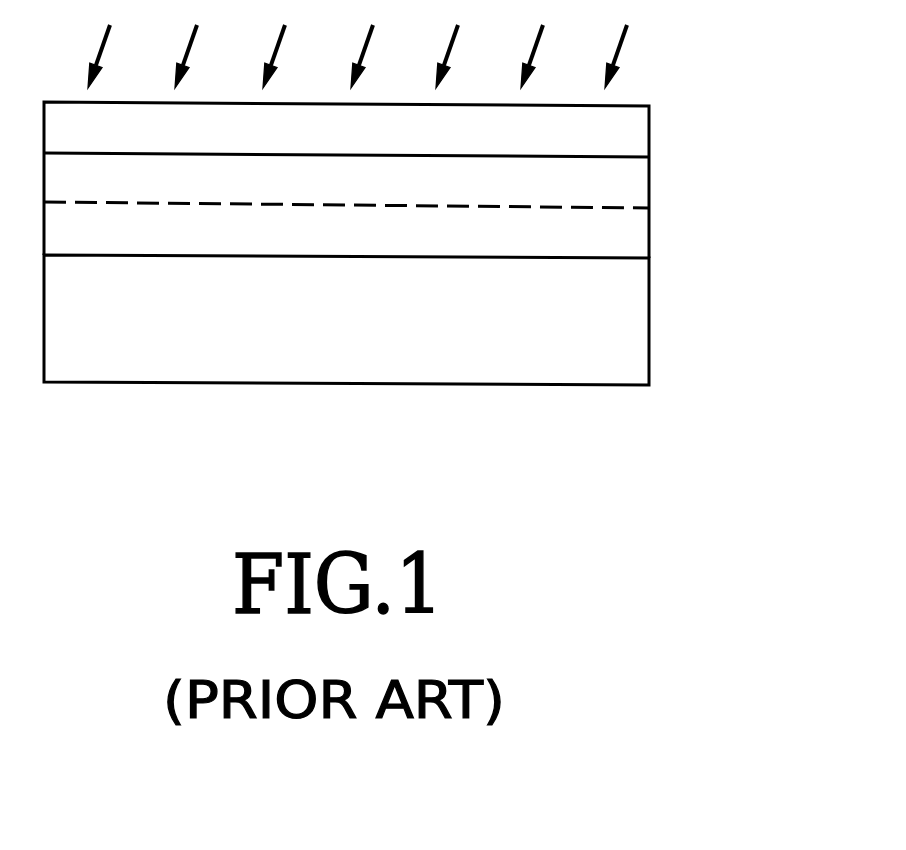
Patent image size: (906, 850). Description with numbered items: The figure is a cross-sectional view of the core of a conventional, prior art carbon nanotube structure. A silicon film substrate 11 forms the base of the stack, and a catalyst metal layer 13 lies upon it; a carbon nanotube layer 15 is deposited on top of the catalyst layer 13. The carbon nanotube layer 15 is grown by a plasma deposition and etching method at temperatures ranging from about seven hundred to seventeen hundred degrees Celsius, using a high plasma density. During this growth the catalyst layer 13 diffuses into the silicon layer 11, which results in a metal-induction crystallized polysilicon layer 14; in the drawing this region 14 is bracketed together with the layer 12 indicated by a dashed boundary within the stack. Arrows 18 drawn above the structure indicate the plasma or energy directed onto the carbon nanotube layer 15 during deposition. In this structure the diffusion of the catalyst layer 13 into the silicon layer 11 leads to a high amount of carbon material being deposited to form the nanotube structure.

The silicon film substrate 11 is at (638, 313).
The first layer of recording layer 12 is at (638, 237).
The catalyst metal layer 13 is at (638, 177).
The metal-induction crystallized polysilicon layer 14 is at (767, 158).
The carbon nanotube layer 15 is at (638, 125).
The incident light / irradiation 18 is at (622, 48).